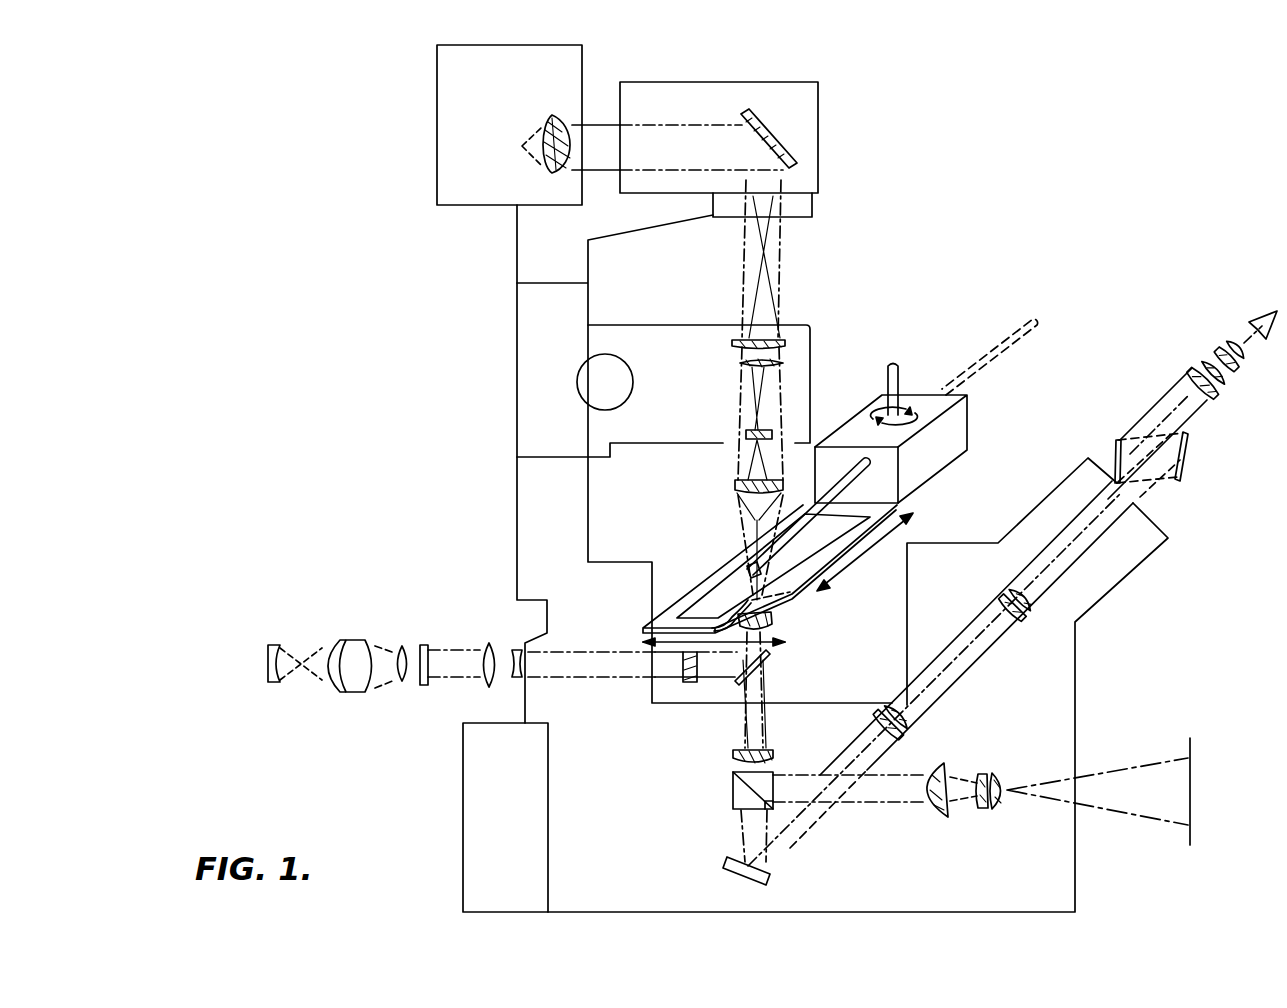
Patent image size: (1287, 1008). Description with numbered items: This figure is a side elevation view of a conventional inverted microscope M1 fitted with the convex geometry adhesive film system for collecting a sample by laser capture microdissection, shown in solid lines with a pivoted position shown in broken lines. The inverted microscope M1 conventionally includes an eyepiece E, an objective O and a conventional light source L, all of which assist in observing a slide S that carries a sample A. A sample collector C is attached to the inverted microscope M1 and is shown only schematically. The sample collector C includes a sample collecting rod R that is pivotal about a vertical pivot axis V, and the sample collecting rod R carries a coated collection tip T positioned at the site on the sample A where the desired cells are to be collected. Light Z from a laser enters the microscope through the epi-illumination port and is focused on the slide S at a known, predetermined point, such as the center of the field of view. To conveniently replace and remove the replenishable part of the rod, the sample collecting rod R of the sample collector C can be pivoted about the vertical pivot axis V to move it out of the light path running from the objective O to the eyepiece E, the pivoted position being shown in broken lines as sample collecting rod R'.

The light source L is at (485, 118).
The inverted microscope M1 is at (437, 301).
The vertical pivot axis V is at (902, 381).
The sample collector C is at (980, 403).
The sample collecting rod in pivoted position R' is at (990, 349).
The sample collecting rod R is at (808, 516).
The coated collection tip T is at (750, 566).
The slide S is at (717, 570).
The sample A is at (733, 610).
The objective O is at (772, 626).
The light from a laser Z is at (320, 634).
The eyepiece E is at (1233, 395).